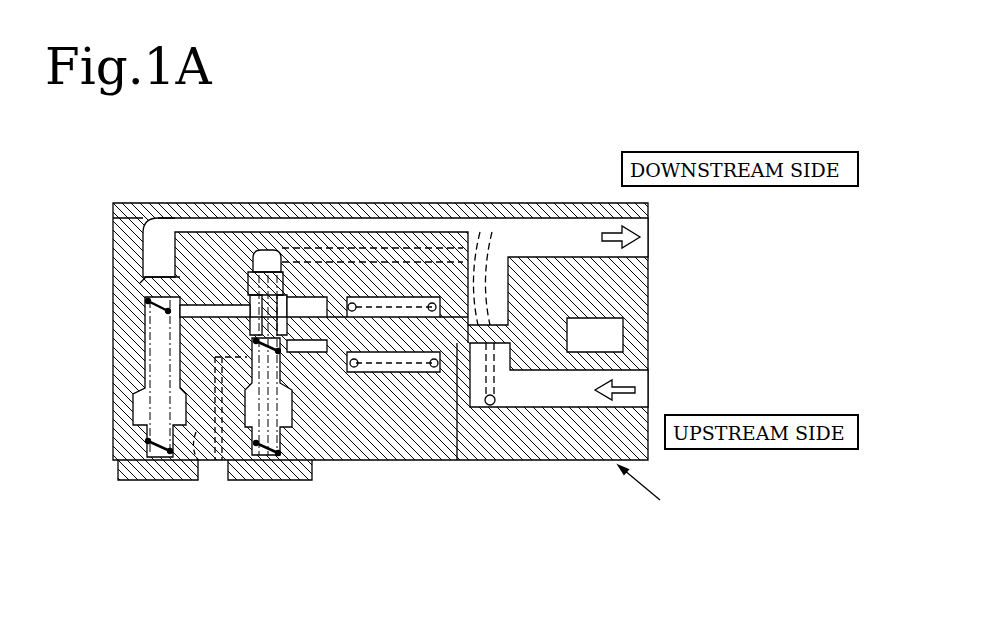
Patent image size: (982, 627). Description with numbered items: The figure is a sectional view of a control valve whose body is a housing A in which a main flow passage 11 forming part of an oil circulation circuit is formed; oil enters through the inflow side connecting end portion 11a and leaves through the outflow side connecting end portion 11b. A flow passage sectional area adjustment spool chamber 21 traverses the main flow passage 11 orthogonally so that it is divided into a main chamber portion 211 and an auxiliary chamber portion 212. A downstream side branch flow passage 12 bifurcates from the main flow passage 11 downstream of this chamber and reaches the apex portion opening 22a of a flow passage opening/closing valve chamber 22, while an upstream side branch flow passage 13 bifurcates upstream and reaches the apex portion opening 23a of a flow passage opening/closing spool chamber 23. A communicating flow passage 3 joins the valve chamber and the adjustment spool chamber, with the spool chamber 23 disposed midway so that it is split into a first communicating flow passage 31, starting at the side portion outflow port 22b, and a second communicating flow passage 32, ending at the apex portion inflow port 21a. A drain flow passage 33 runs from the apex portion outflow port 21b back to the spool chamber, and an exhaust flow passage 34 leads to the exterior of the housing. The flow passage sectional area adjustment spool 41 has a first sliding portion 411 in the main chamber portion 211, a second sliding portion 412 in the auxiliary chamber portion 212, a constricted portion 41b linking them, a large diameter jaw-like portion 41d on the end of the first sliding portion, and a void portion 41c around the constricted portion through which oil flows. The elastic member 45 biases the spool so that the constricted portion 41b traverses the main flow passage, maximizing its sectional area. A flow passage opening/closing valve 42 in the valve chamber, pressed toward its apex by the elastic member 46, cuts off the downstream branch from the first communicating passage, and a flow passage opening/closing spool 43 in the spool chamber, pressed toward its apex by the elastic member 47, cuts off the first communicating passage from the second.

The main flow passage 11 is at (493, 217).
The inflow side connecting end portion 11a is at (633, 378).
The outflow side connecting end portion 11b is at (633, 248).
The downstream side branch flow passage 12 is at (113, 208).
The upstream side branch flow passage 13 is at (365, 232).
The flow passage sectional area adjustment spool chamber 21 is at (410, 372).
The apex portion inflow port 21a is at (307, 310).
The apex portion outflow port 21b is at (333, 460).
The main chamber portion 211 is at (385, 372).
The auxiliary chamber portion 212 is at (607, 340).
The flow passage opening/closing valve chamber 22 is at (157, 373).
The apex portion opening 22a is at (145, 262).
The side portion outflow port 22b is at (163, 248).
The flow passage opening/closing spool chamber 23 is at (268, 460).
The apex portion opening 23a is at (285, 250).
The communicating flow passage 3 is at (267, 244).
The first communicating flow passage 31 is at (187, 304).
The second communicating flow passage 32 is at (300, 307).
The drain flow passage 33 is at (313, 460).
The exhaust flow passage 34 is at (194, 484).
The flow passage sectional area adjustment spool 41 is at (445, 400).
The constricted portion 41b is at (520, 362).
The void portion 41c is at (468, 400).
The large diameter jaw-like portion 41d is at (353, 460).
The first sliding portion 411 is at (422, 375).
The second sliding portion 412 is at (570, 460).
The flow passage opening/closing valve 42 is at (138, 288).
The flow passage opening/closing spool 43 is at (264, 252).
The elastic member 45 is at (382, 232).
The elastic member 46 is at (162, 443).
The elastic member 47 is at (258, 462).
The housing A is at (676, 510).